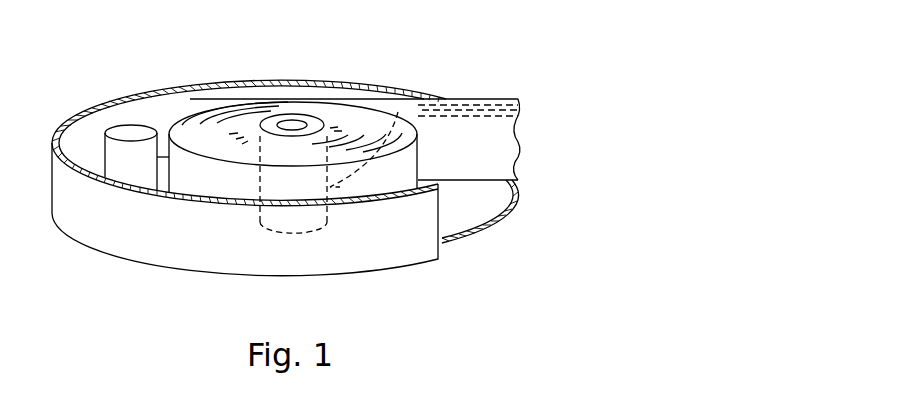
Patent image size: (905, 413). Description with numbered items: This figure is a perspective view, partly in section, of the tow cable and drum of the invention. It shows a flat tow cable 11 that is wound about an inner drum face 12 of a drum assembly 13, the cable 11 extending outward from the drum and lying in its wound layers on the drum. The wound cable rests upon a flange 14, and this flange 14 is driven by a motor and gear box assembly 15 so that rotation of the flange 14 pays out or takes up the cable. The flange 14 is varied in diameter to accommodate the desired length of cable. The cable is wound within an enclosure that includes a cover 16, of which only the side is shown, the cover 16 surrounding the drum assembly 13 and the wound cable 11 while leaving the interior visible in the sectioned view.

The flat tow cable 11 is at (483, 143).
The inner drum face 12 is at (384, 128).
The drum assembly 13 is at (292, 121).
The flange 14 is at (483, 208).
The motor and gear box assembly 15 is at (125, 127).
The cover 16 is at (408, 255).